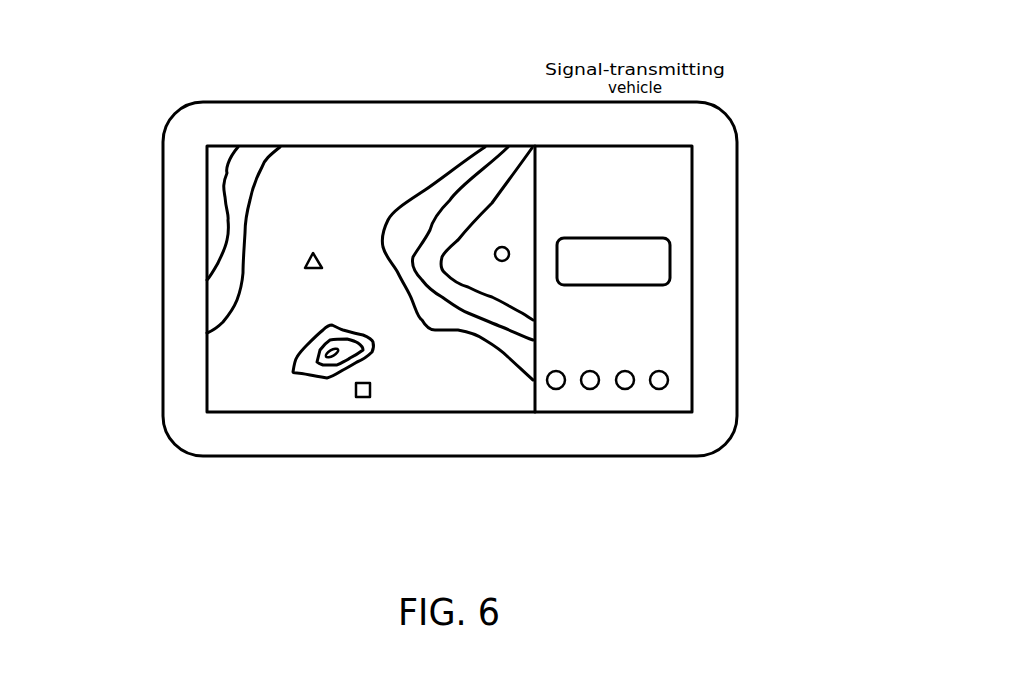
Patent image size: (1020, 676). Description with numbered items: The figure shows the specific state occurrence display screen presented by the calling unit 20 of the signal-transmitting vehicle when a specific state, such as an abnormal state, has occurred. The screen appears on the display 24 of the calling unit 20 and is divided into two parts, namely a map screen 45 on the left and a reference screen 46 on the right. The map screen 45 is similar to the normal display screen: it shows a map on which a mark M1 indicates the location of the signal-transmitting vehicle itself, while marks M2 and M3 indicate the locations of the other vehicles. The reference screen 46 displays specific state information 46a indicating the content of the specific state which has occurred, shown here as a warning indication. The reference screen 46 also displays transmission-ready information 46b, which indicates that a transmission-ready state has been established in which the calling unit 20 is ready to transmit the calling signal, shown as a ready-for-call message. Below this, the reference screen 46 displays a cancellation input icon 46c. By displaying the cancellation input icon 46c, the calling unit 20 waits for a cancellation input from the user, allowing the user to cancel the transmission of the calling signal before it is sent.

The calling unit 20 is at (164, 132).
The display 24 is at (207, 288).
The map screen 45 is at (503, 393).
The reference screen 46 is at (608, 403).
The specific state information 46a is at (667, 347).
The transmission-ready information 46b is at (673, 198).
The cancellation input icon 46c is at (670, 260).
The mark M1 is at (315, 253).
The mark M2 is at (363, 397).
The mark M3 is at (505, 250).